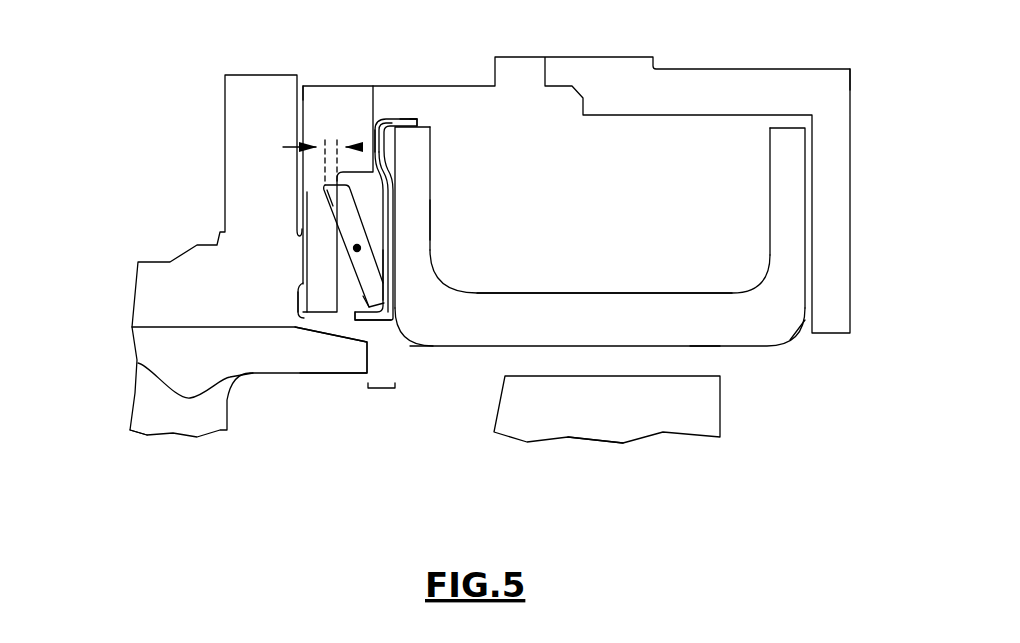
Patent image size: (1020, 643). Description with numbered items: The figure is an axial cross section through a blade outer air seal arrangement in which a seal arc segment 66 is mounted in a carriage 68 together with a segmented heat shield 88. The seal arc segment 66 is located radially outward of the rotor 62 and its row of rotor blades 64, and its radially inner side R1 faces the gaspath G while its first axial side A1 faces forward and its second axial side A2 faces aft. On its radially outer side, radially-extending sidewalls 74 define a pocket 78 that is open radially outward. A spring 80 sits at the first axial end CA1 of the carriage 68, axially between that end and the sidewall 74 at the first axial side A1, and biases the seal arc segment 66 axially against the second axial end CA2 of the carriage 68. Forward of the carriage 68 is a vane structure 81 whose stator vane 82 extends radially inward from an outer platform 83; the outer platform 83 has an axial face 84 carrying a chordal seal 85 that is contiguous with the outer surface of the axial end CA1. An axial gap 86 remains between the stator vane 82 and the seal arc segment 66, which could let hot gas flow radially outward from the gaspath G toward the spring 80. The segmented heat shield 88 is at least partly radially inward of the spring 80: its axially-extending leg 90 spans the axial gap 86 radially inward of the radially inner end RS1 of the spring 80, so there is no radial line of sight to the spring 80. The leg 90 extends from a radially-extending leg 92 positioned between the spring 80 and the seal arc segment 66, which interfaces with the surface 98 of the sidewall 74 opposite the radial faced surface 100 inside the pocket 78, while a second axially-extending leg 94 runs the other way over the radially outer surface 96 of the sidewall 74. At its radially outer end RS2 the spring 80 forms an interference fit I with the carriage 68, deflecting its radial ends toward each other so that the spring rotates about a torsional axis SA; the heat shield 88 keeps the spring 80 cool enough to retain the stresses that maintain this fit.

The rotor 62 is at (602, 490).
The rotor blades 64 is at (653, 422).
The seal arc segment 66 is at (617, 276).
The carriage 68 is at (367, 110).
The sidewalls 74 is at (420, 240).
The pocket 78 is at (632, 236).
The spring 80 is at (358, 230).
The vane structure 81 is at (80, 446).
The stator vane 82 is at (157, 402).
The outer platform 83 is at (320, 378).
The axial face 84 is at (301, 321).
The chordal seal 85 is at (303, 262).
The axial gap 86 is at (382, 388).
The segmented heat shield 88 is at (398, 275).
The axially-extending leg 90 is at (378, 323).
The radially-extending leg 92 is at (390, 193).
The second axially-extending leg 94 is at (409, 121).
The radially outer surface 96 is at (422, 124).
The surface 98 is at (382, 107).
The radial faced surface 100 is at (432, 220).
The first axial end of carriage CA1 is at (316, 68).
The second axial end of carriage CA2 is at (851, 63).
The radially inner end of spring RS1 is at (355, 306).
The radially outer end of spring RS2 is at (320, 193).
The torsional axis SA is at (352, 248).
The interference fit I is at (331, 143).
The gaspath G is at (262, 466).
The first axial side A1 is at (426, 357).
The second axial side A2 is at (798, 352).
The radially inner side R1 is at (708, 354).